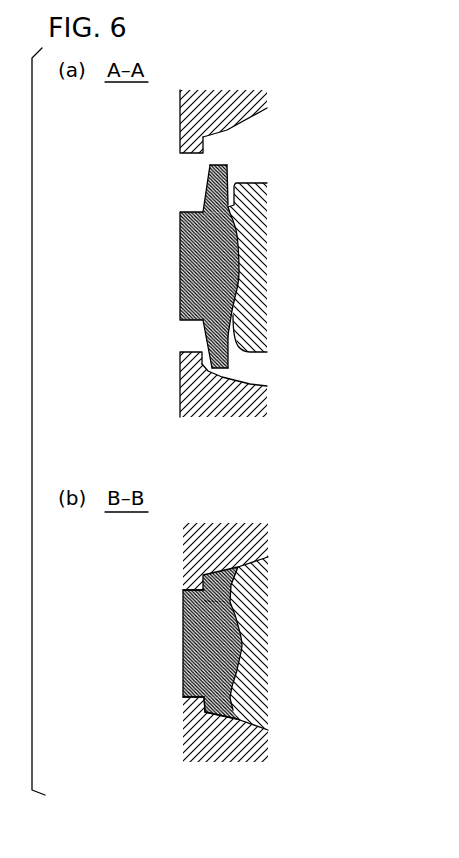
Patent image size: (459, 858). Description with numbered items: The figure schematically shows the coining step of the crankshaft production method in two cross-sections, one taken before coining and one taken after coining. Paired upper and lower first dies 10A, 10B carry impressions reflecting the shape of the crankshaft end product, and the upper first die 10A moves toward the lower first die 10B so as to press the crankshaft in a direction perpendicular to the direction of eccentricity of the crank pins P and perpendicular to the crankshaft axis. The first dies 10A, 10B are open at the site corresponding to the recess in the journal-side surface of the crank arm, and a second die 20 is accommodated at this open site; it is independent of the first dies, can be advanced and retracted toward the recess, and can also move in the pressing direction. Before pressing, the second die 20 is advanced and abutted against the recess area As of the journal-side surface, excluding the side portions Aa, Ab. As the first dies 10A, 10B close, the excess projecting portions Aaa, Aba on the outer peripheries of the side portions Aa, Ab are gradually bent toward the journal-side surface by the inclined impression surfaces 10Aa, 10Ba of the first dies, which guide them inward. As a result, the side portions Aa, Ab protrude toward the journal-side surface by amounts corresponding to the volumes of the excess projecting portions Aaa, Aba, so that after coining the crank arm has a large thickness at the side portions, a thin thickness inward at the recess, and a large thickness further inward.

The upper first die 10A is at (262, 112).
The surface of the impression of the upper first die 10Aa is at (228, 140).
The lower first die 10B is at (265, 393).
The surface of the impression of the lower first die 10Ba is at (228, 371).
The second die 20 is at (260, 293).
The crank pin P is at (187, 240).
The side portion of the crank arm Aa is at (202, 207).
The excess projecting portion Aaa is at (208, 173).
The recess area As is at (238, 283).
The side portion of the crank arm Ab is at (205, 331).
The excess projecting portion Aba is at (200, 365).